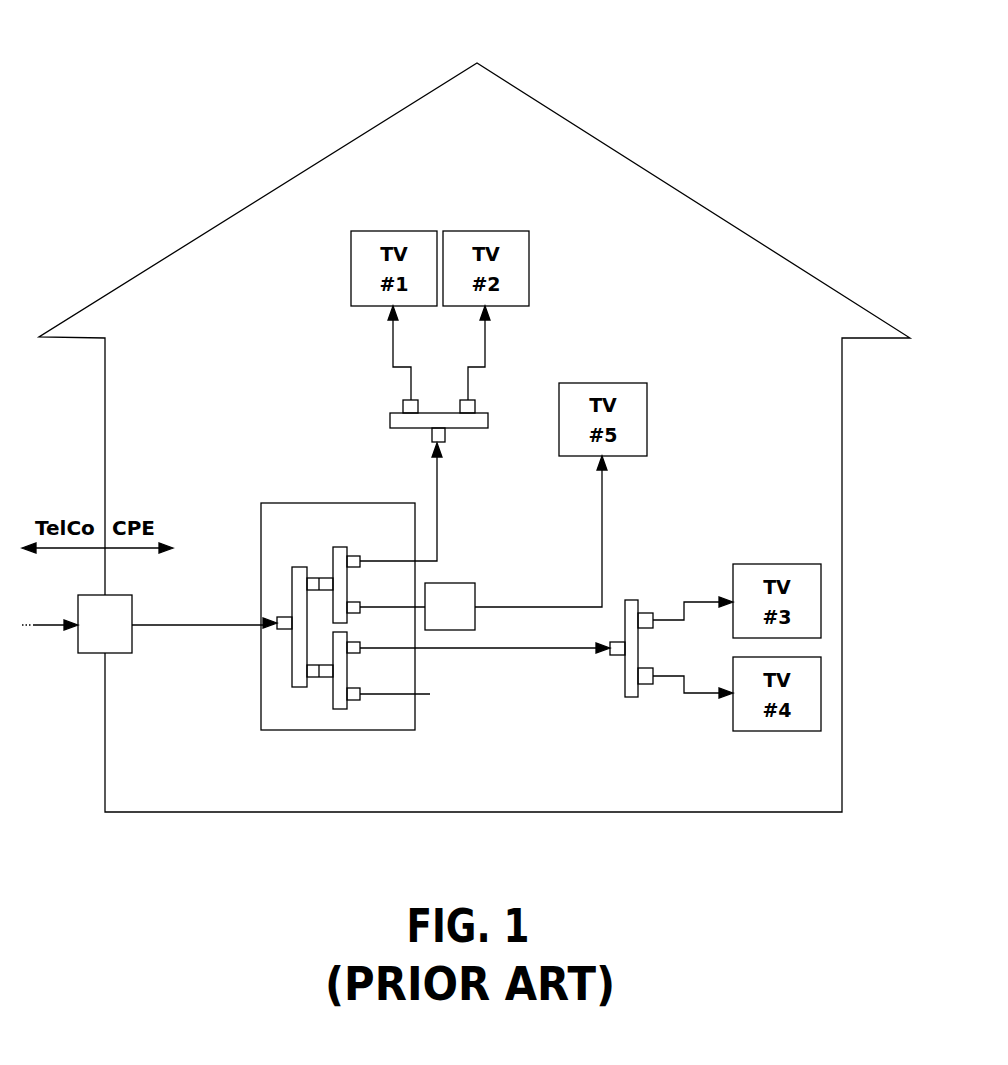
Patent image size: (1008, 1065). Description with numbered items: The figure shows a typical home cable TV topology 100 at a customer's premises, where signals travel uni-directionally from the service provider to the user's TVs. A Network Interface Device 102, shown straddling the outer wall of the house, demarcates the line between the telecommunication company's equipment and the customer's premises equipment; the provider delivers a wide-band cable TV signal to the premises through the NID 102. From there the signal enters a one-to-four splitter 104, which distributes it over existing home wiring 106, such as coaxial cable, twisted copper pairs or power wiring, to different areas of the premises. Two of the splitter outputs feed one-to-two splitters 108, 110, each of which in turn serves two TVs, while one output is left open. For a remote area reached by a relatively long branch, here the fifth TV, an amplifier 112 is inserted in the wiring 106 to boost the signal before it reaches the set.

The home cable TV topology 100 is at (716, 49).
The Network Interface Device (NID) 102 is at (103, 654).
The 1:4 splitter 104 is at (338, 503).
The existing home wiring 106 is at (393, 350).
The 1:2 splitter 108 is at (387, 429).
The 1:2 splitter 110 is at (613, 677).
The amplifier 112 is at (450, 606).